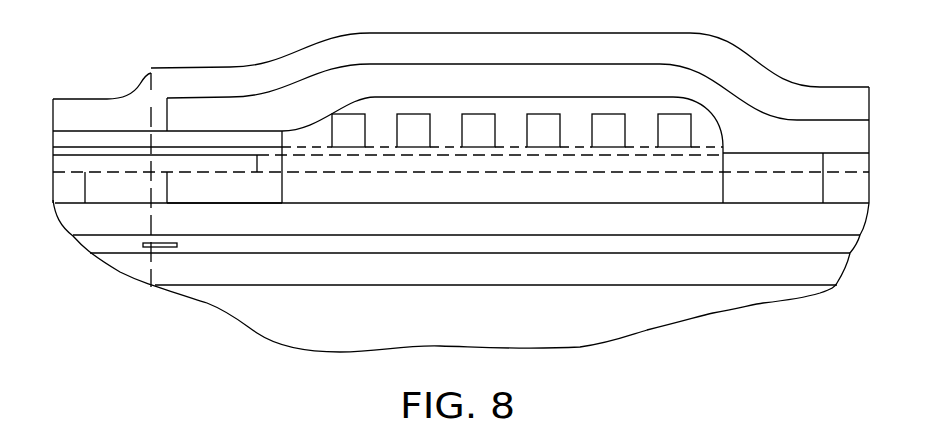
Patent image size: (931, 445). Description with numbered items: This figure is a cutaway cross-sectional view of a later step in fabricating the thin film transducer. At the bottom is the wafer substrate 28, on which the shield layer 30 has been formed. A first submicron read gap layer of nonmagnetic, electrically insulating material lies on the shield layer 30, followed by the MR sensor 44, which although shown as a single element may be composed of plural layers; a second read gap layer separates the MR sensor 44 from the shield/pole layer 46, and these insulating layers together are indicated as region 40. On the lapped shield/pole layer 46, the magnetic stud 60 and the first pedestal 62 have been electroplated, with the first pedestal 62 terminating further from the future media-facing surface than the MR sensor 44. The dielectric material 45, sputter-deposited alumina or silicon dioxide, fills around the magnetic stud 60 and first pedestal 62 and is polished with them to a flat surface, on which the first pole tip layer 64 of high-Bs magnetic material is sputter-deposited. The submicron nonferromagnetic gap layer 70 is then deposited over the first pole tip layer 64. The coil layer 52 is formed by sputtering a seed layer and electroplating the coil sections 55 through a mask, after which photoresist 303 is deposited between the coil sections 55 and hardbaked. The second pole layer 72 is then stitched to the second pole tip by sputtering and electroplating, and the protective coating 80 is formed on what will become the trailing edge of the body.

The photoresist 303 is at (145, 86).
The protective coating 80 is at (546, 61).
The second pole layer 72 is at (489, 96).
The coil sections 55 is at (670, 113).
The coil layer 52 is at (706, 128).
The first pole tip layer 64 is at (232, 141).
The nonferromagnetic gap layer 70 is at (102, 152).
The dielectric material 45 is at (138, 197).
The first pedestal 62 is at (238, 197).
The magnetic stud 60 is at (786, 199).
The shield/pole layer 46 is at (602, 232).
The region of nonmagnetic, electrically insulating layers 40 is at (641, 247).
The MR sensor 44 is at (168, 248).
The shield layer 30 is at (367, 282).
The wafer substrate 28 is at (473, 331).